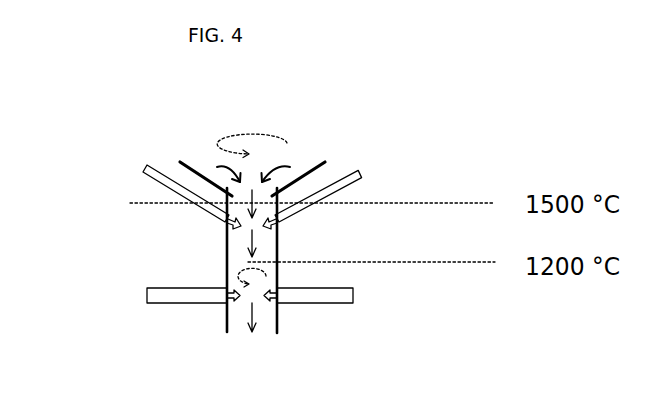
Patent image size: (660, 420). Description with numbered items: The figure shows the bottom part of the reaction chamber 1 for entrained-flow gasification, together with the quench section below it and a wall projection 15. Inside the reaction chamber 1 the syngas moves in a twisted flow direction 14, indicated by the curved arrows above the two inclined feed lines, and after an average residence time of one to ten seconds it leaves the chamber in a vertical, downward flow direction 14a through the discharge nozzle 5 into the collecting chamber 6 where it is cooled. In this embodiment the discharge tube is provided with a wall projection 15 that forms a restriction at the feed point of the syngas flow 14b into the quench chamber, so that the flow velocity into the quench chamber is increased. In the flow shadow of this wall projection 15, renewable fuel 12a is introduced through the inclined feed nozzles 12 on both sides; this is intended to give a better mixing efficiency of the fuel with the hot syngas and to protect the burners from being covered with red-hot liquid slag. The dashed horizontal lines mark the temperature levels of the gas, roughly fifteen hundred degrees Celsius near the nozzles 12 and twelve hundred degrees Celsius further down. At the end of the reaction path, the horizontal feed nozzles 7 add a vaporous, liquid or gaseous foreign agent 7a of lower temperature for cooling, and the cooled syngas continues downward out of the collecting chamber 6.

The reaction chamber 1 is at (264, 143).
The discharge nozzle 5 is at (282, 266).
The collecting chamber 6 is at (268, 267).
The feed nozzles for foreign agent 7 is at (147, 297).
The foreign agent 7a is at (241, 304).
The feed nozzles for renewable fuel 12 is at (140, 168).
The renewable fuel 12a is at (212, 218).
The flow direction of syngas into the reaction chamber 14 is at (218, 165).
The flow direction of syngas when exiting the reaction chamber 14a is at (227, 246).
The feed gas flow of syngas into quench chamber 14b is at (187, 208).
The wall projection 15 is at (285, 199).